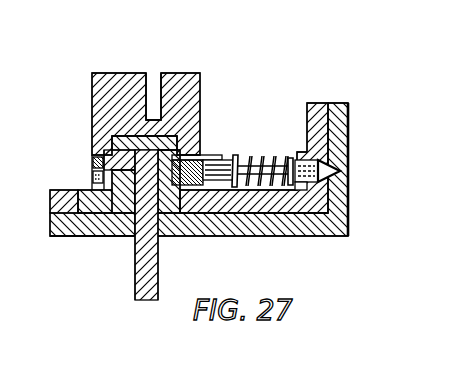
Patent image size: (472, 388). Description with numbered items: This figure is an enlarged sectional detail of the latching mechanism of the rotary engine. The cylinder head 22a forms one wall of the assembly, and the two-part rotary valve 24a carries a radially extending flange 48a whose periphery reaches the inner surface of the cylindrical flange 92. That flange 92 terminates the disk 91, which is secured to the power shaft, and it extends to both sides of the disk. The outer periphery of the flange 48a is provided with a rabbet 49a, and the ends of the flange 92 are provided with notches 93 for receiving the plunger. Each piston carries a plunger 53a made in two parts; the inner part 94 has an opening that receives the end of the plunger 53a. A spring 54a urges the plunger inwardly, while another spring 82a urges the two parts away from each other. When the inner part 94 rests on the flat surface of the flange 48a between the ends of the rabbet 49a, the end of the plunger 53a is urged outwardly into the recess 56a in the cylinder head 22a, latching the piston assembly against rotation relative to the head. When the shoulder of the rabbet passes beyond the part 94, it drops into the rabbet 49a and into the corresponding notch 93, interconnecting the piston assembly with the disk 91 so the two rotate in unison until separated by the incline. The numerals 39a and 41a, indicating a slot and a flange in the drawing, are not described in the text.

The slot 39a is at (152, 70).
The flange 41a is at (130, 138).
The cylindrical flange 92 is at (123, 155).
The notch 93 is at (91, 163).
The rabbet 49a is at (90, 178).
The radially extending flange 48a is at (127, 193).
The disk 91 is at (154, 263).
The rotary valve 24a is at (291, 225).
The cylinder head 22a is at (340, 190).
The spring 82a is at (208, 155).
The inner plunger part 94 is at (213, 155).
The plunger 53a is at (230, 155).
The spring 54a is at (277, 155).
The recess 56a is at (336, 170).